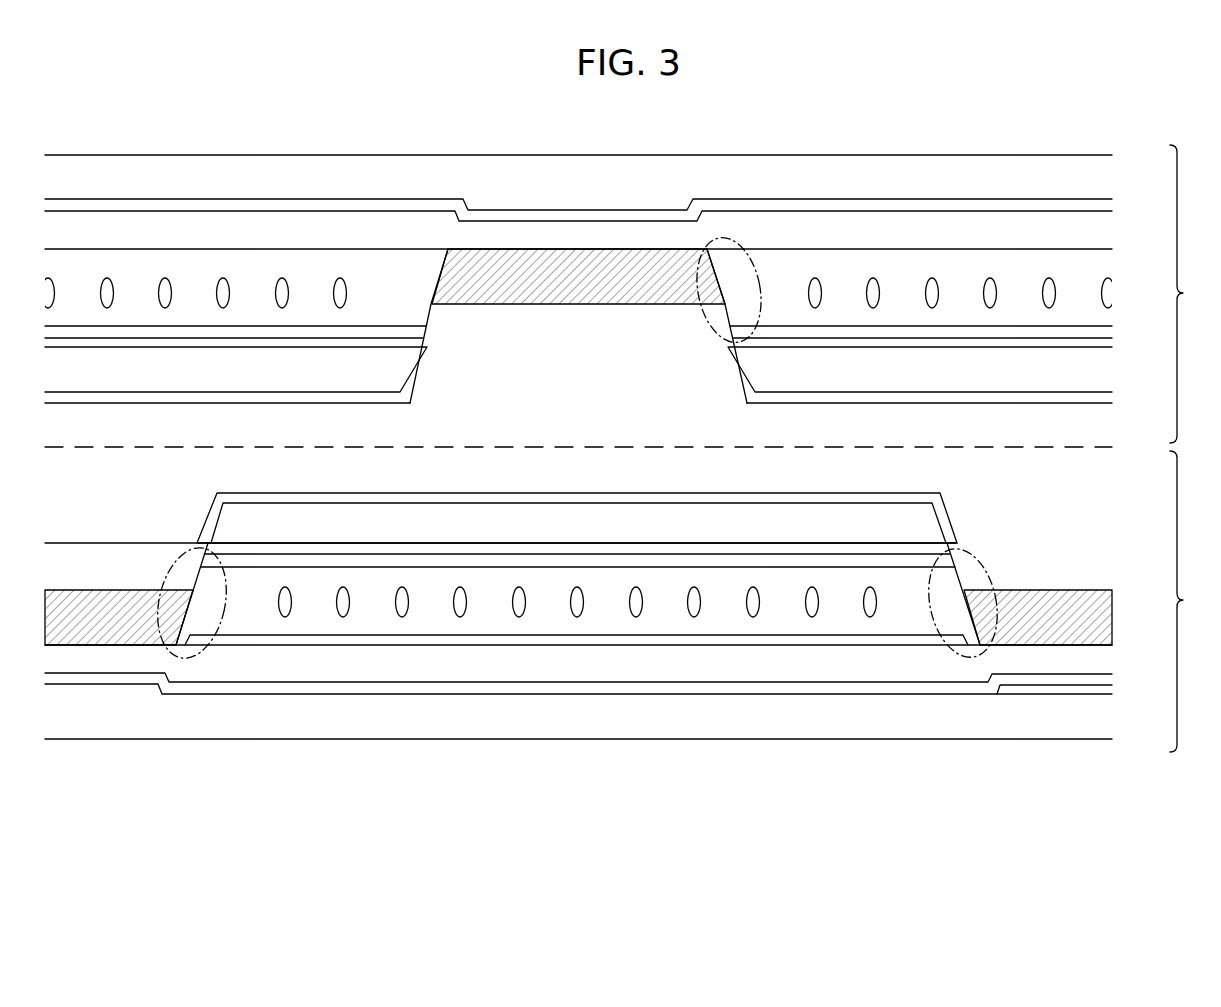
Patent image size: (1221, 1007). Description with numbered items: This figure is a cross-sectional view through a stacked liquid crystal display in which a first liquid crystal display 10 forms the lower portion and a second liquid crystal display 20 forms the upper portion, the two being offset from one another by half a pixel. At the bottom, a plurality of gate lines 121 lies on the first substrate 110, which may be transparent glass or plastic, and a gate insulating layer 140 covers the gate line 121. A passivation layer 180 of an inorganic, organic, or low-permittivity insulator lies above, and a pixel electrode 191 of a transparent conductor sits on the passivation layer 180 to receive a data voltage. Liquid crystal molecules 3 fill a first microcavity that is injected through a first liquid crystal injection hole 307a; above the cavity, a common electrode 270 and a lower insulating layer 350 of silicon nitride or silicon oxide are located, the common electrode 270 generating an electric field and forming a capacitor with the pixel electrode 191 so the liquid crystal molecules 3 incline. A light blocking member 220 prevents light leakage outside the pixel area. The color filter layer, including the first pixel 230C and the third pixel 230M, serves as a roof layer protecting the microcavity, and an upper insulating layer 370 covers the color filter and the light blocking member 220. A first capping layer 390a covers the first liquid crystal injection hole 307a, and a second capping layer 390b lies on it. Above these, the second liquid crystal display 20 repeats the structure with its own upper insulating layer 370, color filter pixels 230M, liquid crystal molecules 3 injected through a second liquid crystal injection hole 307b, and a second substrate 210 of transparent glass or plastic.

The liquid crystal molecules 3 is at (1048, 277).
The first liquid crystal display 10 is at (1189, 601).
The second liquid crystal display 20 is at (1189, 294).
The first substrate 110 is at (870, 720).
The gate line 121 is at (630, 205).
The gate insulating layer 140 is at (423, 205).
The passivation layer 180 is at (990, 225).
The pixel electrode 191 is at (555, 637).
The second substrate 210 is at (342, 177).
The light blocking member 220 is at (502, 270).
The first pixel 230C is at (578, 523).
The third pixel 230M is at (578, 369).
The common electrode 270 is at (253, 332).
The first liquid crystal injection hole 307a is at (192, 653).
The second liquid crystal injection hole 307b is at (722, 237).
The lower insulating layer 350 is at (133, 343).
The upper insulating layer 370 is at (845, 400).
The first capping layer 390a is at (1100, 468).
The second capping layer 390b is at (1100, 428).